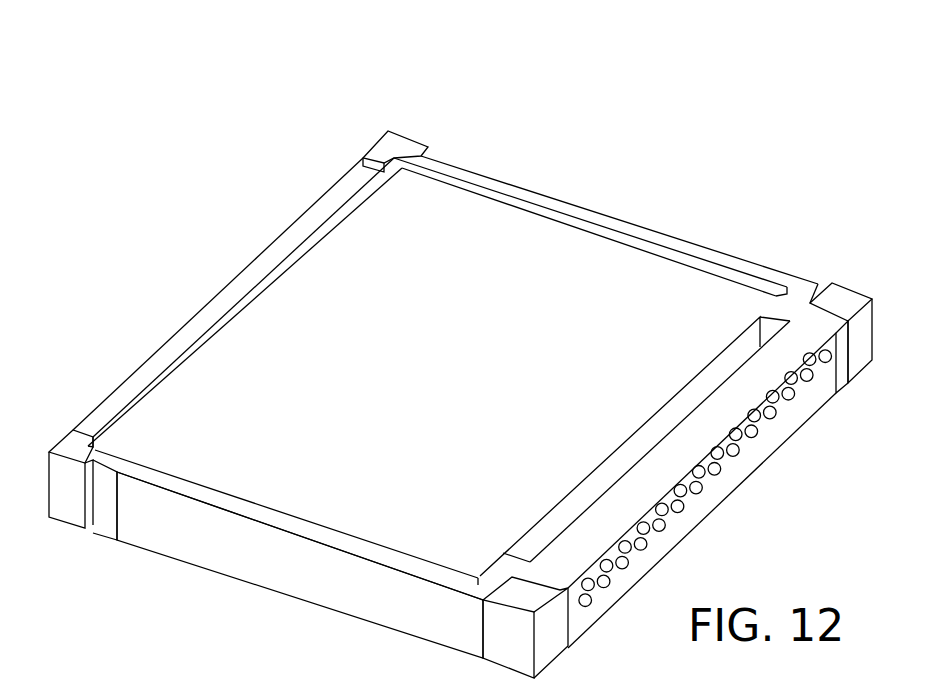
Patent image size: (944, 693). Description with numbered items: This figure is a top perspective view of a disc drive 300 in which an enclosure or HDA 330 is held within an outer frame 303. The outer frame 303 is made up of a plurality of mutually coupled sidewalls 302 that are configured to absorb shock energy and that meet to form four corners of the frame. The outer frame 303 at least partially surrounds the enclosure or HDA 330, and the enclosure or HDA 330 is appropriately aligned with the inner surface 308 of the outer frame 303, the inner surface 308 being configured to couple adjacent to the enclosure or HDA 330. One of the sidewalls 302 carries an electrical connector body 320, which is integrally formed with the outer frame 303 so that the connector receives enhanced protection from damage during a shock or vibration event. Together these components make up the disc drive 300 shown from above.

The disc drive 300 is at (733, 128).
The sidewalls 302 is at (116, 402).
The outer frame 303 is at (648, 224).
The inner surface 308 is at (327, 222).
The electrical connector body 320 is at (727, 467).
The enclosure or HDA 330 is at (520, 238).